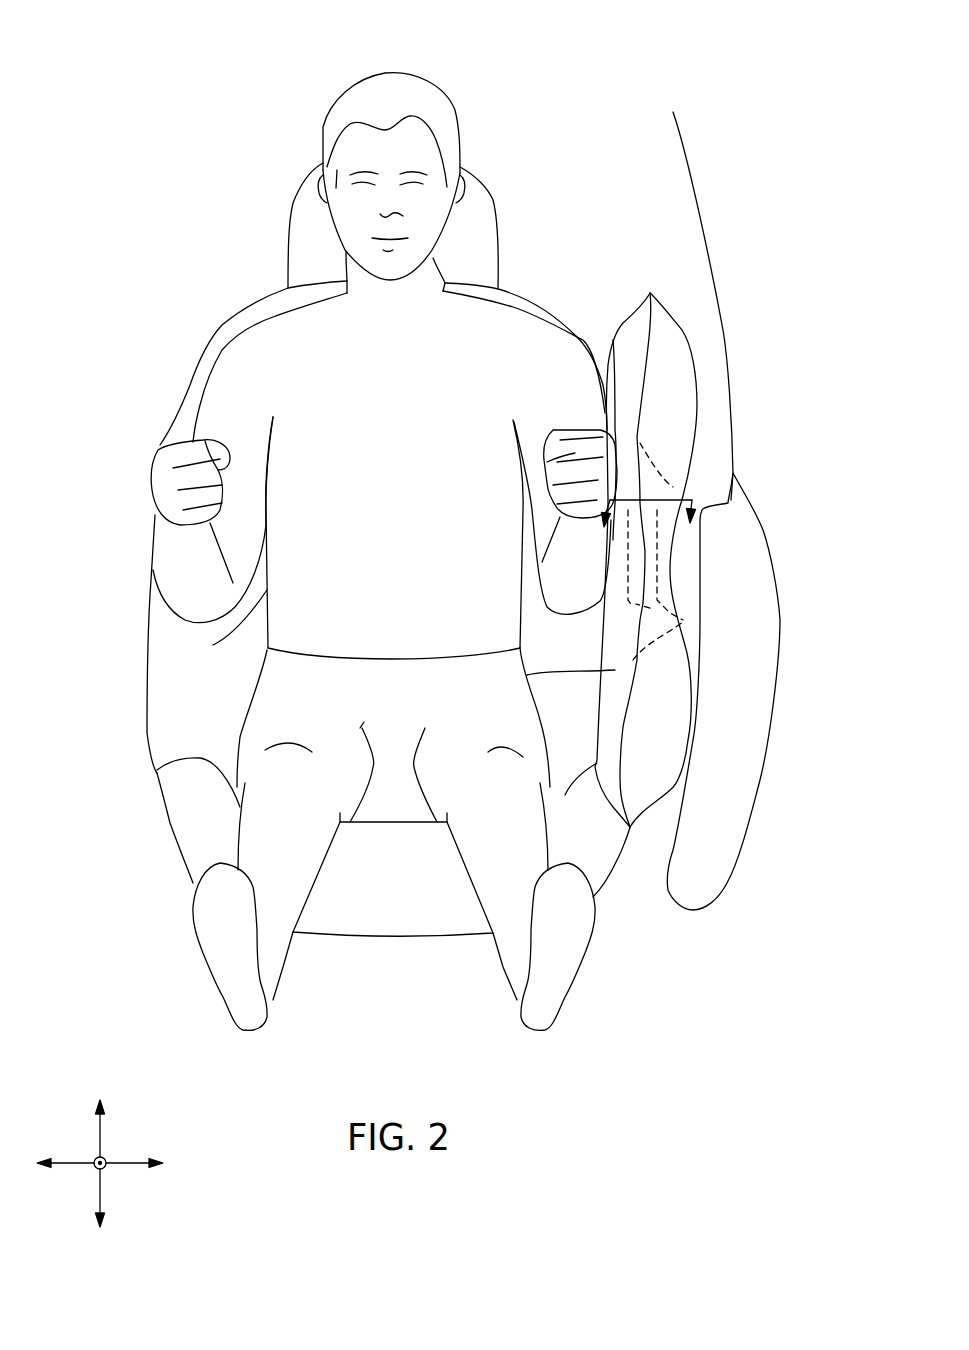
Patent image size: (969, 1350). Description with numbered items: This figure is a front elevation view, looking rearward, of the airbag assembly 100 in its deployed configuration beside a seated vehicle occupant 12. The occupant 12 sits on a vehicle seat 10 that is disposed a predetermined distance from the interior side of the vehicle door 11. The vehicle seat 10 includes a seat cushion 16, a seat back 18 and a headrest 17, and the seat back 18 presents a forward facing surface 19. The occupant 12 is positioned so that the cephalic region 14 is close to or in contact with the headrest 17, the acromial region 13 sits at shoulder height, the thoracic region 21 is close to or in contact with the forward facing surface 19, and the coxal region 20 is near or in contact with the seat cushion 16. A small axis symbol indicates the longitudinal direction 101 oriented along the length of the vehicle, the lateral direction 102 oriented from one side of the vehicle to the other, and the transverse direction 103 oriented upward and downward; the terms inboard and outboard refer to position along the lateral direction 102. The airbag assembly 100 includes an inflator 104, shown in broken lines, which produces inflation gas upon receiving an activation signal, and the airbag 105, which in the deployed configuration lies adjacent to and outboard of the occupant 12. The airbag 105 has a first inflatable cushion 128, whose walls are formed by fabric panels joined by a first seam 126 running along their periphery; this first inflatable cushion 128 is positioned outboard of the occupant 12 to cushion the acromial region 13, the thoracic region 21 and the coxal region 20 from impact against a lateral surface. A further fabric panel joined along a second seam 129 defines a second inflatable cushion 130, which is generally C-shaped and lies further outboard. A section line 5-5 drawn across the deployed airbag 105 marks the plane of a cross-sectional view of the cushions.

The section line 5- 5 is at (650, 504).
The vehicle seat 10 is at (130, 647).
The vehicle door 11 is at (767, 592).
The occupant 12 is at (457, 57).
The acromial region 13 is at (190, 394).
The cephalic region 14 is at (457, 113).
The seat cushion 16 is at (180, 830).
The headrest 17 is at (300, 184).
The seat back 18 is at (130, 707).
The forward facing surface 19 is at (165, 730).
The coxal region 20 is at (237, 733).
The thoracic region 21 is at (223, 624).
The airbag assembly 100 is at (672, 195).
The longitudinal direction 101 is at (105, 1167).
The lateral direction 102 is at (137, 1158).
The transverse direction 103 is at (103, 1117).
The inflator 104 is at (650, 608).
The airbag 105 is at (687, 300).
The first seam 126 is at (647, 553).
The first inflatable cushion 128 is at (527, 675).
The second seam 129 is at (647, 368).
The second inflatable cushion 130 is at (670, 727).